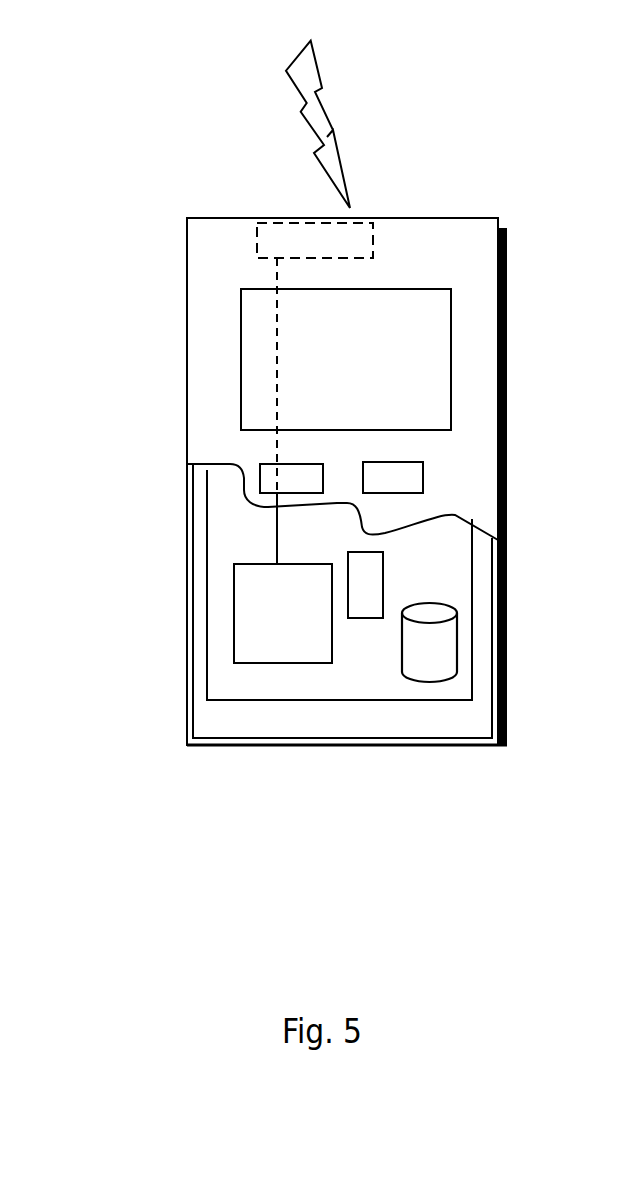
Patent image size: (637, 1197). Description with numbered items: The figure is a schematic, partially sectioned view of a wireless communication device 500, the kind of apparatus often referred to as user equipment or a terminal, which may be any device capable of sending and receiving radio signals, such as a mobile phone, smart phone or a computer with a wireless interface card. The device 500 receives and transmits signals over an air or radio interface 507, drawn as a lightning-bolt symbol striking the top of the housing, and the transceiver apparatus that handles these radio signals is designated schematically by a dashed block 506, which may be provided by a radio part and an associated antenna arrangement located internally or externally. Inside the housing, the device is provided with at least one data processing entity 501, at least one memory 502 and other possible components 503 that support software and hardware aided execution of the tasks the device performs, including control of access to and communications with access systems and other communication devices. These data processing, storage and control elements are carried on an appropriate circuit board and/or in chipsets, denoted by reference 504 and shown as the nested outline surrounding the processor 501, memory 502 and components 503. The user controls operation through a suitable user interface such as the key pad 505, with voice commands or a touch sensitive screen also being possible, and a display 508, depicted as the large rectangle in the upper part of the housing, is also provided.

The communication device 500 is at (188, 262).
The data processing entity 501 is at (240, 596).
The memory 502 is at (422, 655).
The other possible components 503 is at (365, 568).
The circuit board 504 is at (235, 683).
The key pad 505 is at (264, 479).
The transceiver apparatus 506 is at (363, 232).
The air or radio interface 507 is at (353, 145).
The display 508 is at (258, 344).